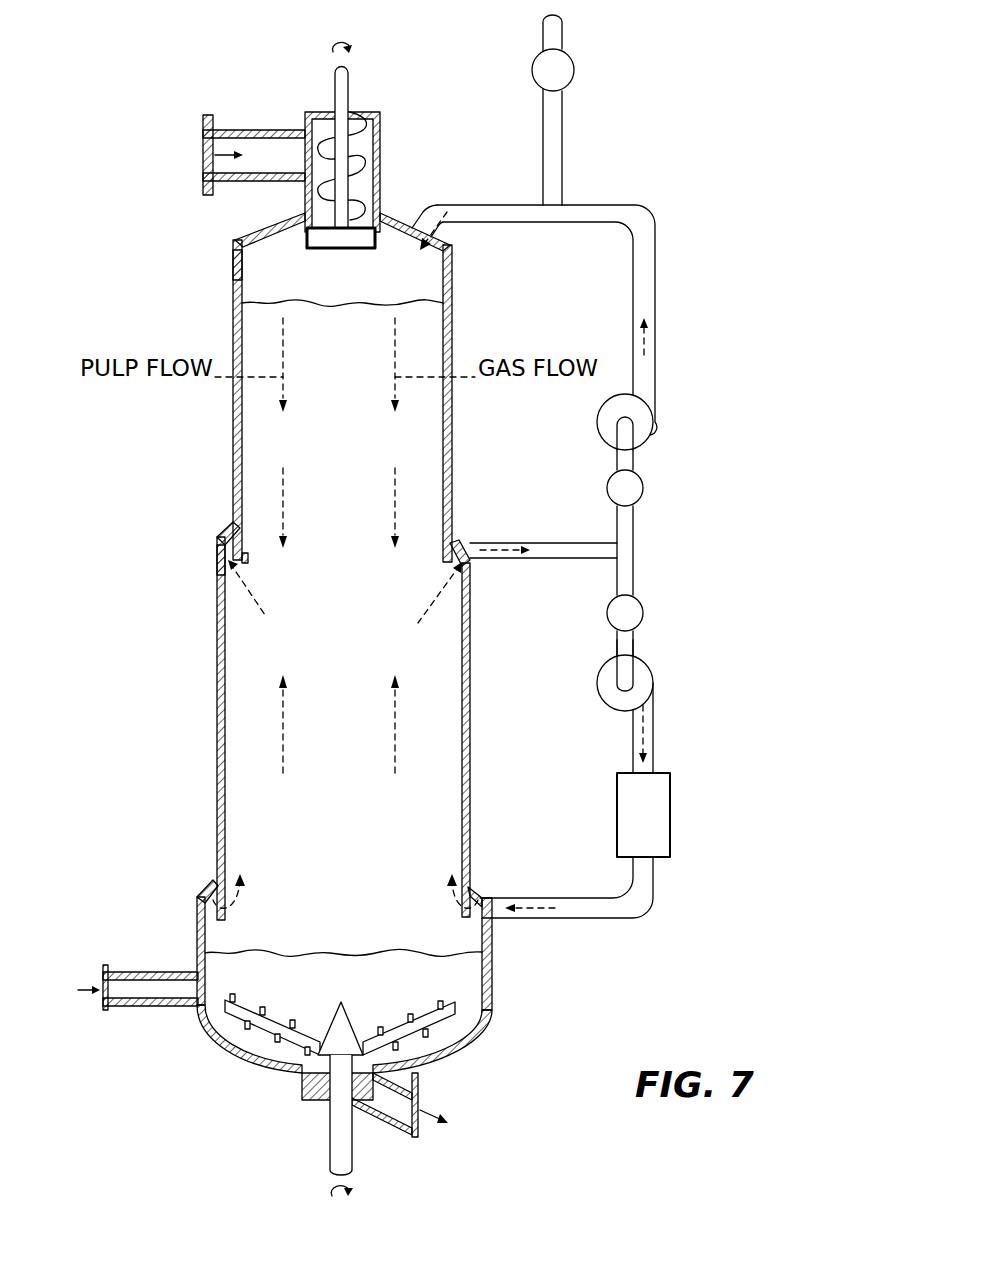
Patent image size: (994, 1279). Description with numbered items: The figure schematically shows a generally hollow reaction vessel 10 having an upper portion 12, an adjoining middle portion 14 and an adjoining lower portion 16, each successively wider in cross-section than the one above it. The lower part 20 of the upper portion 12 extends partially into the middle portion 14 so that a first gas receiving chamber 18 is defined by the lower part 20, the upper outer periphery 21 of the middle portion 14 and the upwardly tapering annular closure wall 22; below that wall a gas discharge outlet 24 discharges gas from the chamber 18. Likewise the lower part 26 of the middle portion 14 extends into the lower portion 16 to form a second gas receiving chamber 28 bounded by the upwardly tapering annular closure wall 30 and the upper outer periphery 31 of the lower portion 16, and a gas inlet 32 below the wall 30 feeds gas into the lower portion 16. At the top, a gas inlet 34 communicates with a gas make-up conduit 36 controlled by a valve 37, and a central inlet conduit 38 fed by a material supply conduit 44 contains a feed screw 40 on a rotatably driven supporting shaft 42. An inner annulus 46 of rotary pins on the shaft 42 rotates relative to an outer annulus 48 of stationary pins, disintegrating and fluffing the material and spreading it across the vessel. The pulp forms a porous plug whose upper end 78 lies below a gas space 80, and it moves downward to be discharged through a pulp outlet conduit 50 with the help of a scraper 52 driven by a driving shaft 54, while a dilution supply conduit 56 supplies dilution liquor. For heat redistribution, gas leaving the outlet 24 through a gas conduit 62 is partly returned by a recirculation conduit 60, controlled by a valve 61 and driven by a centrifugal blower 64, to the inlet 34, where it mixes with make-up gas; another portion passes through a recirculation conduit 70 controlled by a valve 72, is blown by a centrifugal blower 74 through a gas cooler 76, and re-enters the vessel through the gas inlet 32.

The reaction vessel 10 is at (500, 293).
The upper portion 12 is at (233, 416).
The middle portion 14 is at (218, 718).
The lower portion 16 is at (204, 952).
The first gas receiving chamber 18 is at (457, 533).
The lower part of the upper portion 20 is at (243, 552).
The upper outer periphery of the middle portion 21 is at (222, 563).
The annular closure wall 22 is at (227, 533).
The gas discharge outlet 24 is at (467, 567).
The lower part of the middle portion 26 is at (228, 890).
The second gas receiving chamber 28 is at (473, 892).
The upwardly tapering annular closure wall 30 is at (205, 887).
The upper outer periphery of the lower portion 31 is at (200, 912).
The gas inlet 32 is at (487, 915).
The gas inlet 34 is at (420, 222).
The gas make-up conduit 36 is at (562, 33).
The valve 37 is at (574, 78).
The inlet conduit 38 is at (382, 133).
The feed screw 40 is at (352, 178).
The supporting shaft 42 is at (345, 98).
The material supply conduit 44 is at (265, 145).
The inner annulus of rotary pins 46 is at (363, 248).
The outer annulus of stationary pins 48 is at (287, 232).
The pulp outlet conduit 50 is at (418, 1103).
The scraper 52 is at (420, 1015).
The driving shaft 54 is at (338, 1150).
The dilution supply conduit 56 is at (158, 990).
The recirculation conduit 60 is at (643, 247).
The valve 61 is at (675, 486).
The gas conduit 62 is at (587, 522).
The centrifugal blower 64 is at (655, 422).
The recirculation conduit 70 is at (653, 746).
The valve 72 is at (643, 618).
The centrifugal blower 74 is at (647, 683).
The gas cooler 76 is at (660, 828).
The upper end of the pulp bed 78 is at (270, 302).
The gas space 80 is at (252, 272).